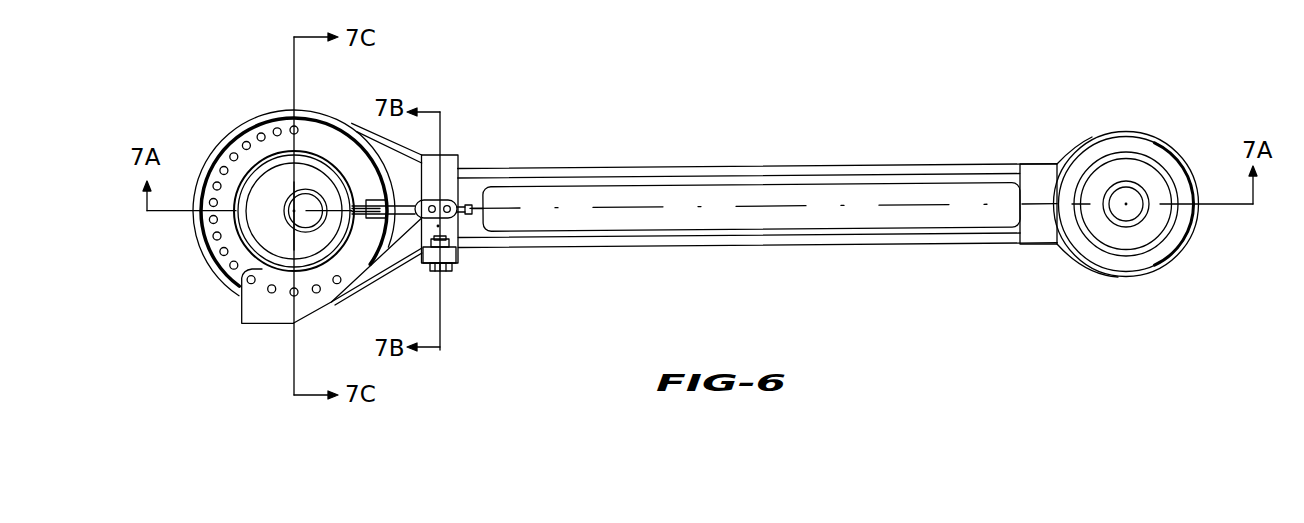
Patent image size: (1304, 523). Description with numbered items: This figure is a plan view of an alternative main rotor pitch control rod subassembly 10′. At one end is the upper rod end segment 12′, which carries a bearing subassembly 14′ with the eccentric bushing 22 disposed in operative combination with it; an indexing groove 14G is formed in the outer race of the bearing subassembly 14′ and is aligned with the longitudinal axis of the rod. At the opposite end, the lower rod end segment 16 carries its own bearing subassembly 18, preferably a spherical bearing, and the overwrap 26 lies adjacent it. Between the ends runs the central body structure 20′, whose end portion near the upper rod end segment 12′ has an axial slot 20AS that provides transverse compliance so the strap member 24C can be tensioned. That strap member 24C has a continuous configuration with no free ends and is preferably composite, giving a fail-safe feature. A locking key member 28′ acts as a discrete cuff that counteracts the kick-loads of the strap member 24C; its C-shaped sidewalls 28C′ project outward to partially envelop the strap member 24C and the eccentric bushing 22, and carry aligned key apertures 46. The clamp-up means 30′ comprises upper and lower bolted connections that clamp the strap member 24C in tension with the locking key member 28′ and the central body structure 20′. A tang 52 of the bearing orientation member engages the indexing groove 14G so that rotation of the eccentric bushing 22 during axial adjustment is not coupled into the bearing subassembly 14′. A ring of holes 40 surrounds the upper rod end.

The main rotor pitch control rod subassembly 10′ is at (750, 119).
The upper rod end segment 12′ is at (246, 90).
The bearing subassembly 14′ is at (209, 268).
The indexing groove 14G is at (370, 156).
The lower rod end segment 16 is at (1136, 104).
The bearing subassembly 18 is at (1094, 180).
The central body structure 20′ is at (737, 222).
The axial slot 20AS is at (470, 200).
The eccentric bushing 22 is at (315, 128).
The strap member 24C is at (258, 235).
The overwrap 26 is at (1040, 167).
The locking key member 28′ is at (447, 156).
The sidewalls 28C′ is at (250, 312).
The clamp-up means 30′ is at (456, 280).
The bolt holes 40 is at (227, 155).
The key apertures 46 is at (337, 284).
The tang 52 is at (392, 218).